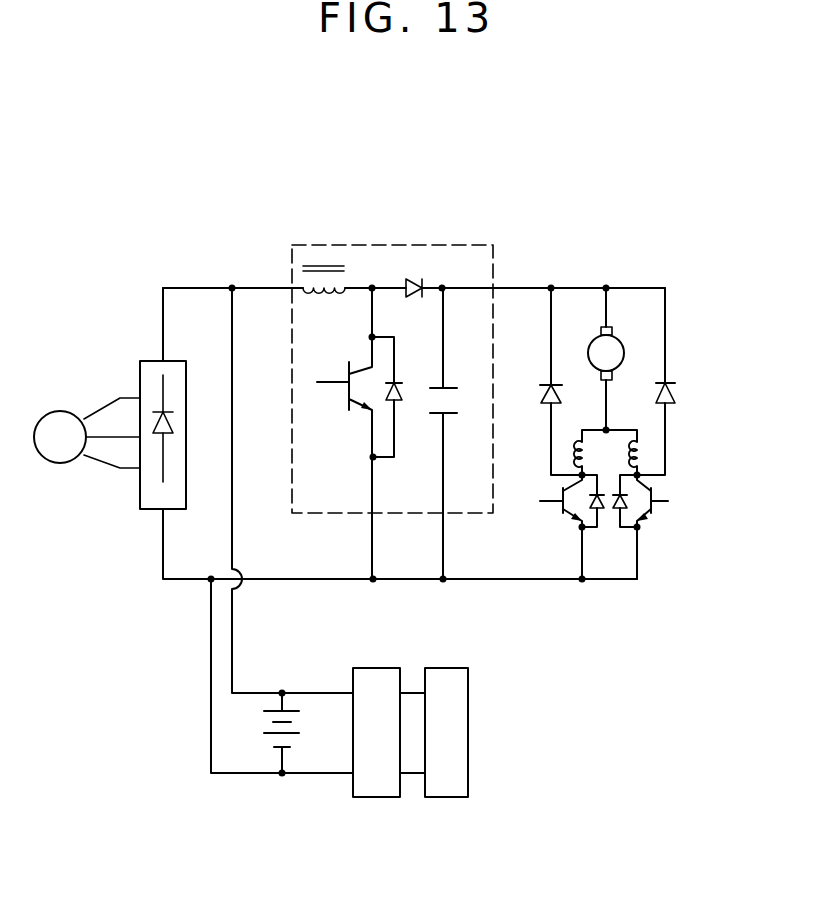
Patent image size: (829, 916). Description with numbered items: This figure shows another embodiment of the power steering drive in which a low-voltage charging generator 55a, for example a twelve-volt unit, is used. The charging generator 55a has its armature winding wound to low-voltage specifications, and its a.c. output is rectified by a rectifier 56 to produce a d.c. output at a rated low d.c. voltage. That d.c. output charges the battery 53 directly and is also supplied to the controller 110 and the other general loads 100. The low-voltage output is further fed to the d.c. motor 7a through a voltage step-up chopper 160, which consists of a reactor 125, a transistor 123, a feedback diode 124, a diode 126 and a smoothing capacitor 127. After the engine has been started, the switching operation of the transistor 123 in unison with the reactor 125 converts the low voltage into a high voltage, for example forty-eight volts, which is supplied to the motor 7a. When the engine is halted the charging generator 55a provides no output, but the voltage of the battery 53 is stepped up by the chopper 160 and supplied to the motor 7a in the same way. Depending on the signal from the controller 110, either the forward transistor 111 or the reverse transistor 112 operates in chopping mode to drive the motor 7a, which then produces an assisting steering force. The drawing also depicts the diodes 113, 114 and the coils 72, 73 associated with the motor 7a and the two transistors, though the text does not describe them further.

The charging generator 55a is at (60, 422).
The rectifier 56 is at (152, 375).
The transistor 123 is at (323, 375).
The feedback diode 124 is at (405, 375).
The reactor 125 is at (330, 298).
The diode 126 is at (413, 273).
The smoothing capacitor 127 is at (460, 402).
The voltage step-up chopper 160 is at (318, 513).
The diode 113 is at (535, 392).
The d.c. motor 7a is at (588, 338).
The diode 114 is at (672, 395).
The field coil 72 is at (592, 453).
The field coil 73 is at (650, 455).
The forward transistor 111 is at (568, 517).
The reverse transistor 112 is at (655, 510).
The battery 53 is at (257, 727).
The general loads 100 is at (383, 785).
The controller 110 is at (455, 790).